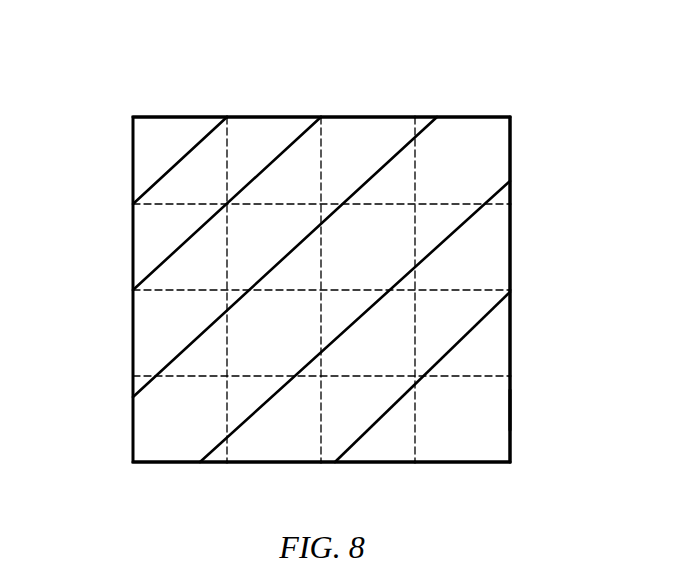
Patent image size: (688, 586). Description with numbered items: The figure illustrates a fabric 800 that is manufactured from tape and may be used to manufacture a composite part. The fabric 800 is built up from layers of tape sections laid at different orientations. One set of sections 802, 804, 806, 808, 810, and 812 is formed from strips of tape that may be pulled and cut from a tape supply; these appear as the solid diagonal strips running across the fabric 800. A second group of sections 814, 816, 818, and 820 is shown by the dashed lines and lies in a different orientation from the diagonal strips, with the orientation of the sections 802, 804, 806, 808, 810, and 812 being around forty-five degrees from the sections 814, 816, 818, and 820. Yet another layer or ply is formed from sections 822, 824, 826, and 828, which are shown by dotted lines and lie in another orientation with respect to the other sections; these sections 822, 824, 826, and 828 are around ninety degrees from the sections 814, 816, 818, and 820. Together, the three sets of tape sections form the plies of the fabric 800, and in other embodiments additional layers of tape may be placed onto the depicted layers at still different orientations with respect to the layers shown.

The fabric 800 is at (93, 66).
The section 802 is at (172, 123).
The section 804 is at (268, 123).
The section 806 is at (375, 123).
The section 808 is at (470, 123).
The section 810 is at (498, 322).
The section 812 is at (498, 407).
The section 814 is at (510, 158).
The section 816 is at (510, 243).
The section 818 is at (510, 355).
The section 820 is at (510, 440).
The section 822 is at (175, 462).
The section 824 is at (268, 462).
The section 826 is at (373, 462).
The section 828 is at (467, 462).